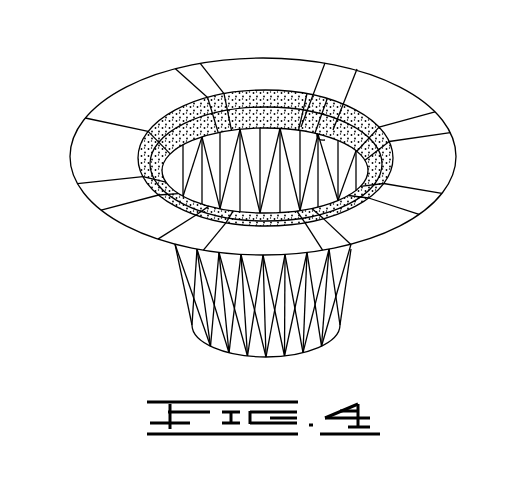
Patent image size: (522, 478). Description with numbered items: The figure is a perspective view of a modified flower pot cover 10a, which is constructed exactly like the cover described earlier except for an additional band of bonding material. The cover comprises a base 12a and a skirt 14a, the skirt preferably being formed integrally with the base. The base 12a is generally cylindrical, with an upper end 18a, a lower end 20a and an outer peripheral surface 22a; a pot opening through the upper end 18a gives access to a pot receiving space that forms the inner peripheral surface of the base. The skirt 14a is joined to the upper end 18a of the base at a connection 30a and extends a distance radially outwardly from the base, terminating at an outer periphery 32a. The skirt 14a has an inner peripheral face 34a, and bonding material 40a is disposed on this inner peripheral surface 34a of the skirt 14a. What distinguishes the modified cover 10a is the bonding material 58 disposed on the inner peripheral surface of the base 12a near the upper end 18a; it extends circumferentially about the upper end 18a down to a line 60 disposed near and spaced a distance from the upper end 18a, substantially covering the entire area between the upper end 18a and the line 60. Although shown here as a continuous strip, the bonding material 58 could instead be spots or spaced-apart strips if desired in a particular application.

The skirt 14a is at (429, 172).
The outer periphery 32a is at (456, 147).
The inner peripheral surface of the skirt 34a is at (118, 103).
The connection 30a is at (281, 110).
The bonding material 58 is at (233, 108).
The upper end 18a is at (193, 121).
The bonding material 40a is at (220, 117).
The line 60 is at (348, 105).
The base 12a is at (321, 327).
The outer peripheral surface 22a is at (182, 283).
The lower end 20a is at (190, 328).
The modified flower pot cover 10a is at (374, 297).